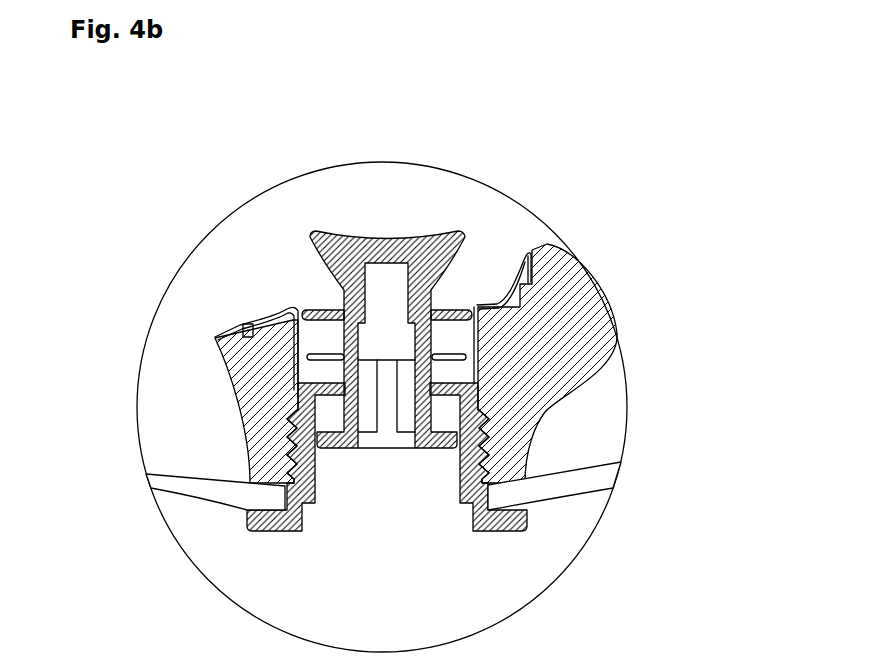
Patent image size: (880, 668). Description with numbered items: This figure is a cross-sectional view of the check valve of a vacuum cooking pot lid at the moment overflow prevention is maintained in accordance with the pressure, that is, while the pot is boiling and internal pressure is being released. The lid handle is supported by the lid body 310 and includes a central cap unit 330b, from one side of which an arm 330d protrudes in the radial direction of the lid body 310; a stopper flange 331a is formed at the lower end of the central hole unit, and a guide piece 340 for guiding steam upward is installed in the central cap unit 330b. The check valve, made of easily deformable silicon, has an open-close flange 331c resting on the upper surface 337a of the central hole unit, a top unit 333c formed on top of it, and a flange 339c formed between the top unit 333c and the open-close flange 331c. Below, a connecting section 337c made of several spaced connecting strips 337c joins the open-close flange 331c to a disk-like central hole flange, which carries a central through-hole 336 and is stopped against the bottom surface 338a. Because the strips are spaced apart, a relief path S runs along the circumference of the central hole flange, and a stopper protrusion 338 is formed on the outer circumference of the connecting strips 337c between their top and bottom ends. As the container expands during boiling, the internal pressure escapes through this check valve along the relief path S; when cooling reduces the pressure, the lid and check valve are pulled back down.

The lid body 310 is at (568, 497).
The central cap unit 330b is at (263, 400).
The arm 330d is at (563, 270).
The stopper flange 331a is at (278, 531).
The open-close flange 331c is at (218, 334).
The top unit 333c is at (387, 277).
The through-hole 336 is at (388, 448).
The upper surface 337a is at (330, 356).
The connecting section (connecting strip) 337c is at (390, 364).
The stopper protrusion 338 is at (470, 432).
The bottom surface 338a is at (340, 403).
The flange 339c is at (321, 311).
The guide piece 340 is at (523, 273).
The relief path S is at (366, 420).